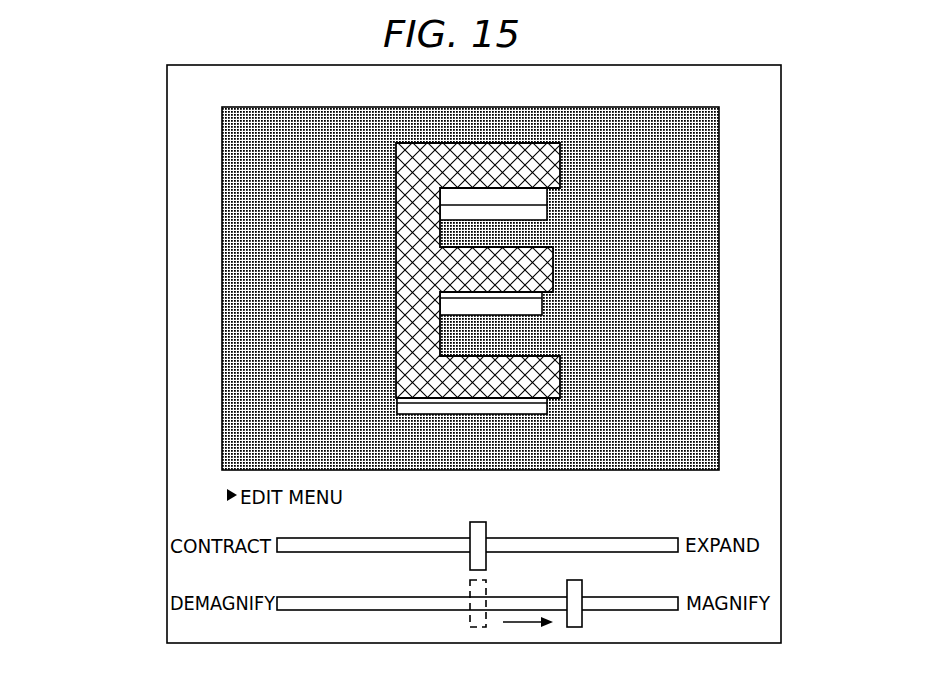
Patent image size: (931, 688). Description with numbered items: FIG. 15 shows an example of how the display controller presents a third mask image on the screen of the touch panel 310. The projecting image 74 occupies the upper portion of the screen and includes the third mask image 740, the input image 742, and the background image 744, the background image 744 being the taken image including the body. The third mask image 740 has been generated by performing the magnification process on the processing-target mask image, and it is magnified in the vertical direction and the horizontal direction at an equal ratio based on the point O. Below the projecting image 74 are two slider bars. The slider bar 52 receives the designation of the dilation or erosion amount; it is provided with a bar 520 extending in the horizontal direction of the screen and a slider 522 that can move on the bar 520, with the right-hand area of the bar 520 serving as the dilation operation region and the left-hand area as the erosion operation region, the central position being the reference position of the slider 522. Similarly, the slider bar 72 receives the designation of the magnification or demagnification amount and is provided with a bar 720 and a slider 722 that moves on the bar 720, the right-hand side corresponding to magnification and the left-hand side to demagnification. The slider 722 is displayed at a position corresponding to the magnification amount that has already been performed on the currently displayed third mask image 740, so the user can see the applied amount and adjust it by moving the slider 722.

The touch panel 310 is at (166, 297).
The projecting image 74 is at (539, 288).
The background image 744 is at (683, 213).
The third mask image 740 is at (304, 270).
The input image 742 is at (418, 241).
The point O is at (400, 398).
The slider bar 52 is at (477, 533).
The bar 520 is at (374, 538).
The slider 522 is at (478, 522).
The slider bar 72 is at (488, 632).
The bar 720 is at (390, 610).
The slider 722 is at (575, 627).